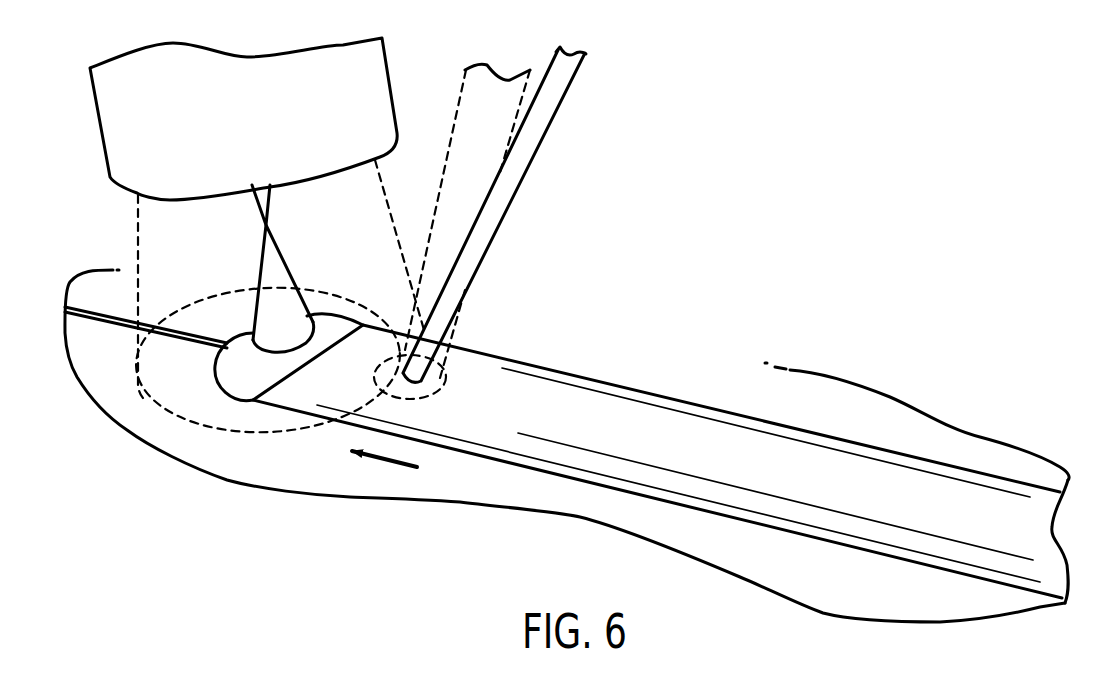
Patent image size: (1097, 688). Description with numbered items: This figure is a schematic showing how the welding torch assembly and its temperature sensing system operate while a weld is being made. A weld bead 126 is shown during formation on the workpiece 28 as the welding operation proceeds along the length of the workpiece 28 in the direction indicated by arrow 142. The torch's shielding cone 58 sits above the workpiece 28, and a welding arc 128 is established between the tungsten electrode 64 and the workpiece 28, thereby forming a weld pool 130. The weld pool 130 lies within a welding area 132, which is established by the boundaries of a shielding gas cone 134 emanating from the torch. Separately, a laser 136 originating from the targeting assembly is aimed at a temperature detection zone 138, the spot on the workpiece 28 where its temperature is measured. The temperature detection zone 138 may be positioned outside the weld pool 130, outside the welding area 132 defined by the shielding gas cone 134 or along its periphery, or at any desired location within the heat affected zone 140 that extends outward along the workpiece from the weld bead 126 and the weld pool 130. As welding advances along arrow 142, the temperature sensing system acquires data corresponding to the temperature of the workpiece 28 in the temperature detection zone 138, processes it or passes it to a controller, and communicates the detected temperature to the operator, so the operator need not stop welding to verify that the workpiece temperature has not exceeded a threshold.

The workpiece 28 is at (358, 487).
The shielding cone 58 is at (377, 71).
The tungsten electrode 64 is at (258, 202).
The weld bead 126 is at (621, 430).
The welding arc 128 is at (287, 249).
The weld pool 130 is at (332, 325).
The welding area 132 is at (187, 387).
The shielding gas cone 134 is at (138, 240).
The laser 136 is at (503, 215).
The temperature detection zone 138 is at (423, 384).
The heat affected zone 140 is at (592, 361).
The arrow 142 is at (388, 465).